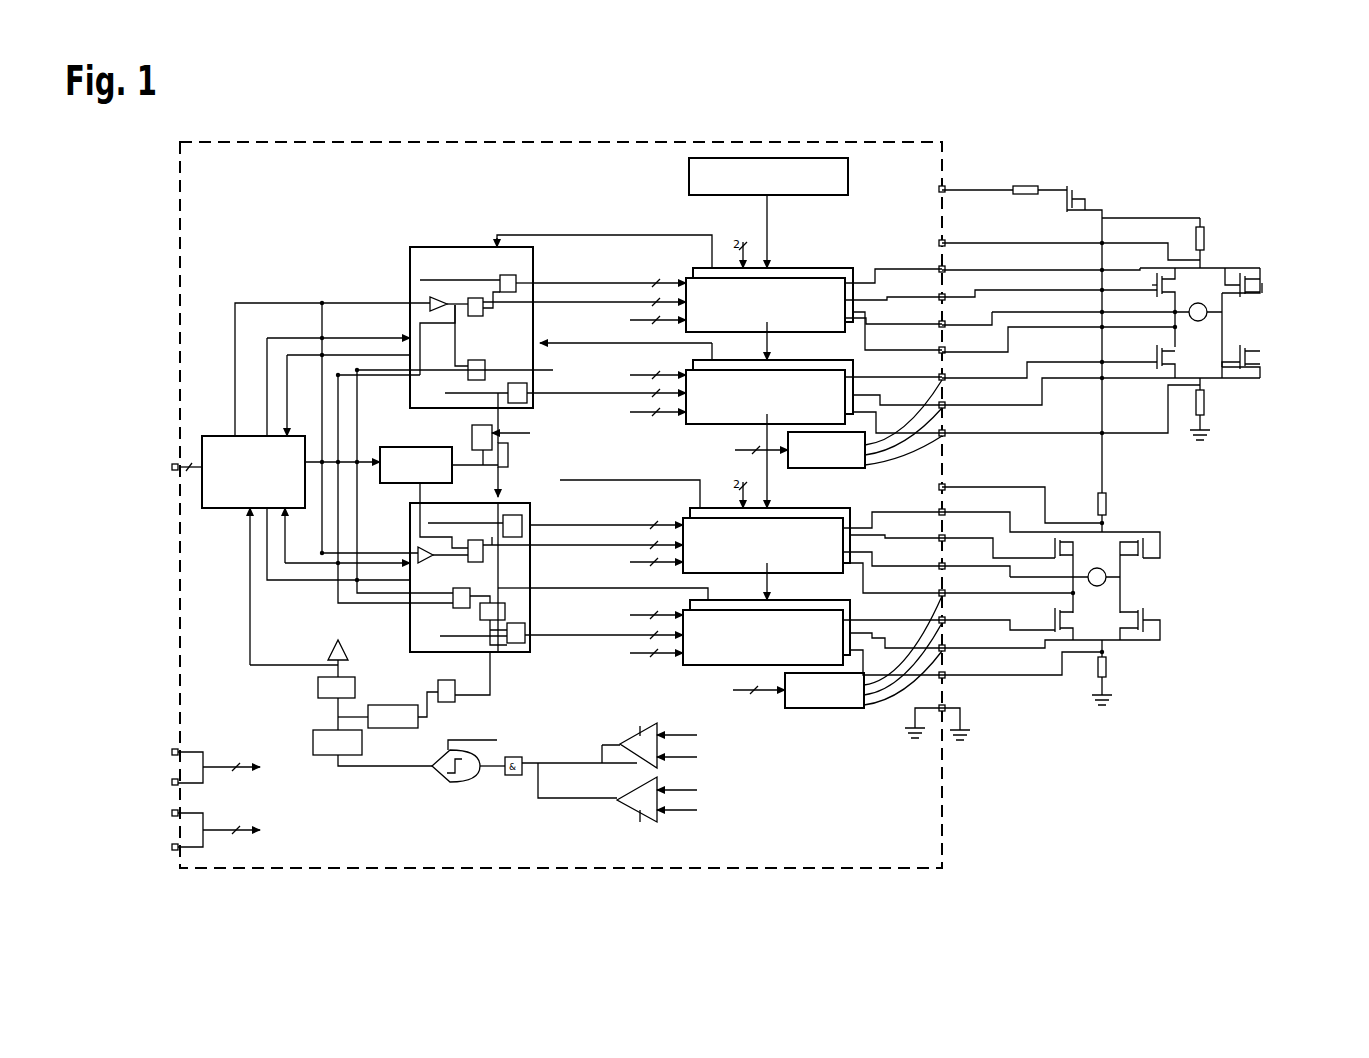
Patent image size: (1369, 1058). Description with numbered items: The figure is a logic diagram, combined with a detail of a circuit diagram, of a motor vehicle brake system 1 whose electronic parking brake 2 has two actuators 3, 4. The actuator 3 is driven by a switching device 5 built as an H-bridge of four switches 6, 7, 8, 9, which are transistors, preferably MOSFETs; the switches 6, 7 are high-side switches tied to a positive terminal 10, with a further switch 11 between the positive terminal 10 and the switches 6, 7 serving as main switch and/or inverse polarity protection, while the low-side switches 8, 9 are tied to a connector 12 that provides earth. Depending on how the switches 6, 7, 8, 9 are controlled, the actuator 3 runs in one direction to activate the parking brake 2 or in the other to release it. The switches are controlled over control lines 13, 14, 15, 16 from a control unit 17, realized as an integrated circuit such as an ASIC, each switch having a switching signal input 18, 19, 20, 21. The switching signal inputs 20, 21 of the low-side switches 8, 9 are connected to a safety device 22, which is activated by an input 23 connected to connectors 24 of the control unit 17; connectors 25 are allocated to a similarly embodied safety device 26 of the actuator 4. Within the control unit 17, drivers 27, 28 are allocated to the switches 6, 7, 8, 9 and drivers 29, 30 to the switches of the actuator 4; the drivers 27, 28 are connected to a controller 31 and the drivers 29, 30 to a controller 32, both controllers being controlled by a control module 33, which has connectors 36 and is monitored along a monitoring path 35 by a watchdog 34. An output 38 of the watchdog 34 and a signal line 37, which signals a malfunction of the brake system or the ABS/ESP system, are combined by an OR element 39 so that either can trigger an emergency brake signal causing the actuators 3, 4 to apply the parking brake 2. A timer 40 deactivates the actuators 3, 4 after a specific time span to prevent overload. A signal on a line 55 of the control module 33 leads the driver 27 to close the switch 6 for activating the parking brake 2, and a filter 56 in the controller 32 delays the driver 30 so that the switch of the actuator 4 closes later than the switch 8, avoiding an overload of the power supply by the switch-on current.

The motor vehicle brake system 1 is at (1183, 172).
The electronic parking brake 2 is at (1257, 226).
The actuator 3 is at (1212, 316).
The actuator 4 is at (1108, 582).
The switching device 5 is at (1216, 206).
The switch 6 is at (1160, 276).
The switch 7 is at (1232, 275).
The switch 8 is at (1178, 372).
The switch 9 is at (1232, 370).
The positive terminal 10 is at (1080, 195).
The further switch 11 is at (1088, 195).
The connector 12 is at (1200, 443).
The control line 13 is at (963, 297).
The control line 14 is at (1017, 270).
The control line 15 is at (1005, 380).
The control line 16 is at (1068, 380).
The control unit 17 is at (180, 272).
The switching signal input 18 is at (1157, 280).
The switching signal input 19 is at (1262, 288).
The switching signal input 20 is at (1150, 367).
The switching signal input 21 is at (1262, 356).
The safety device 22 is at (844, 466).
The input 23 is at (768, 449).
The connectors 24 is at (172, 752).
The connectors 25 is at (172, 813).
The safety device 26 is at (841, 706).
The driver 27 is at (812, 320).
The driver 28 is at (812, 412).
The driver 29 is at (808, 563).
The driver 30 is at (808, 655).
The controller 31 is at (437, 247).
The controller 32 is at (520, 652).
The control module 33 is at (271, 484).
The watchdog 34 is at (433, 481).
The monitoring path 35 is at (362, 466).
The connectors 36 is at (172, 467).
The signal line 37 is at (525, 438).
The output 38 is at (455, 470).
The OR element 39 is at (505, 418).
The timer 40 is at (385, 705).
The line 55 is at (268, 303).
The filter 56 is at (505, 612).